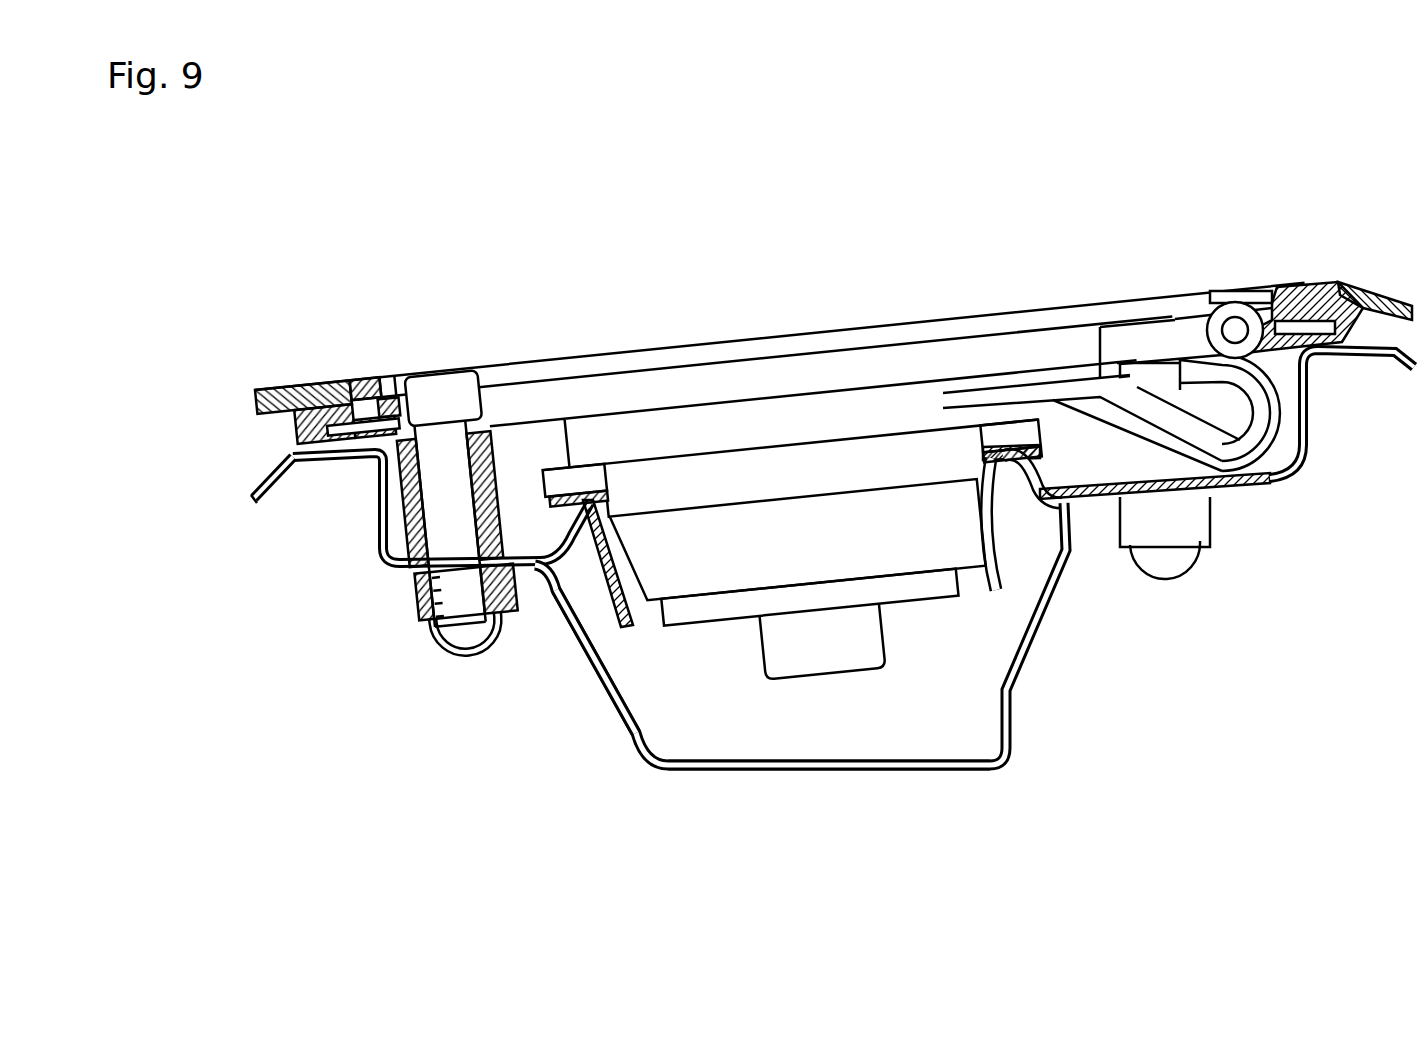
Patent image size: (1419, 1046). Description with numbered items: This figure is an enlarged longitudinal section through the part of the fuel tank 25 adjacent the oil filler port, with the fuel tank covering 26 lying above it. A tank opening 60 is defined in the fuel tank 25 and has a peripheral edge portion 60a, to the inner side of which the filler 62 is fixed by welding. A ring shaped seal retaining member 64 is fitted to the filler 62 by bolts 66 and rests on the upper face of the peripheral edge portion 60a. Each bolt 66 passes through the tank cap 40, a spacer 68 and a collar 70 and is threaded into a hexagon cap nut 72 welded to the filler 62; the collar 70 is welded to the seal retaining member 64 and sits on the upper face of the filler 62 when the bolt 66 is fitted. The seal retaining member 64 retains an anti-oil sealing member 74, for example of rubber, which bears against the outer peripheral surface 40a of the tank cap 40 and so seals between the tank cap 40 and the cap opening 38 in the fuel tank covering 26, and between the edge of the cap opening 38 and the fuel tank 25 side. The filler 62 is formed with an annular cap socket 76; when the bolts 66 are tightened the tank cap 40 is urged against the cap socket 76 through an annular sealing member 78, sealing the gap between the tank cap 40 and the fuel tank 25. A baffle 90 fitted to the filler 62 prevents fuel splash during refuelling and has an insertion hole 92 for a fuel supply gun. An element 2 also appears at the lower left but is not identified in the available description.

The vehicle body panel 2 is at (268, 500).
The fuel tank 25 is at (1380, 357).
The fuel tank covering 26 is at (296, 385).
The cap opening 38 is at (1278, 287).
The tank cap 40 is at (942, 330).
The outer peripheral surface 40a is at (385, 372).
The tank opening 60 is at (378, 545).
The peripheral edge portion 60a is at (326, 460).
The filler 62 is at (608, 585).
The seal retaining member 64 is at (300, 433).
The bolt 66 is at (447, 393).
The spacer 68 is at (490, 445).
The collar 70 is at (410, 585).
The hexagon cap nut 72 is at (450, 653).
The sealing member 74 is at (345, 385).
The cap socket 76 is at (580, 483).
The annular sealing member 78 is at (597, 493).
The baffle 90 is at (603, 700).
The insertion hole 92 is at (790, 770).